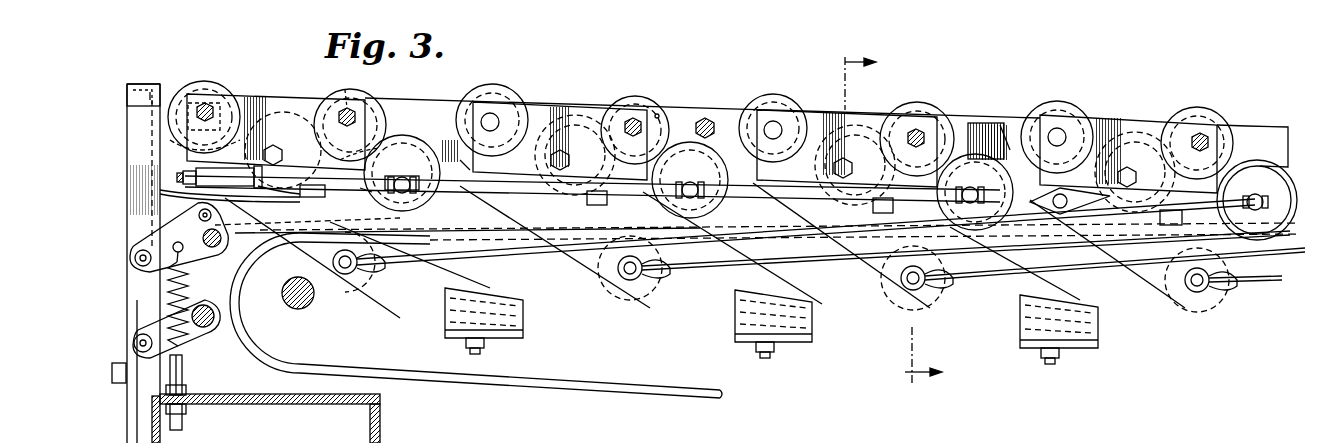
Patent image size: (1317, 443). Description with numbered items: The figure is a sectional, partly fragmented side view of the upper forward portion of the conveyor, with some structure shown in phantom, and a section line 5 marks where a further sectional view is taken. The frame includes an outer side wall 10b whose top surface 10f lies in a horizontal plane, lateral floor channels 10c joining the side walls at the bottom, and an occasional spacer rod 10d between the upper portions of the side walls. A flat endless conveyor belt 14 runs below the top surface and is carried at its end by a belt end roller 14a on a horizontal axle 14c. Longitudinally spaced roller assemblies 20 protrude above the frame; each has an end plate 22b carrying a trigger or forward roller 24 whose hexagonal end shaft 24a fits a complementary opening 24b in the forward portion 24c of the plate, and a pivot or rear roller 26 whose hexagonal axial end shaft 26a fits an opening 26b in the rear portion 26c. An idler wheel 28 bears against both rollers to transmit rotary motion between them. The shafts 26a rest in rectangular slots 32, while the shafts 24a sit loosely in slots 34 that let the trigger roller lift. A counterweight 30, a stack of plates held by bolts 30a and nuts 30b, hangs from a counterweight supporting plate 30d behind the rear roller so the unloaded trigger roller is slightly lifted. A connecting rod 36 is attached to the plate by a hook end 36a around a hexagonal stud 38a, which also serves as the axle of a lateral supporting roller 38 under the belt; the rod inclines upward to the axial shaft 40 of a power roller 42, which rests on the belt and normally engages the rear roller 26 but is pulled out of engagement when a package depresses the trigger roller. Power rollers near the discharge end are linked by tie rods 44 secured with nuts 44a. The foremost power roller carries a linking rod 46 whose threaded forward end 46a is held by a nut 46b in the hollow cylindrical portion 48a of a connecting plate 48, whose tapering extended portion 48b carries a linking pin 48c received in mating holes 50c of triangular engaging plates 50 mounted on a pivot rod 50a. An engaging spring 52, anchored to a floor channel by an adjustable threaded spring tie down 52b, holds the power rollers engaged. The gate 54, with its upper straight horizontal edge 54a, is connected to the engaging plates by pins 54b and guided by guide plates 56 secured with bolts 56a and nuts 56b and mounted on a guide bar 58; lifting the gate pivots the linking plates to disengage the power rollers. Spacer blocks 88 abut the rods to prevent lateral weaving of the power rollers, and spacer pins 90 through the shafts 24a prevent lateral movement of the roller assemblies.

The section line 5- 5 is at (899, 220).
The outer side wall 10b is at (1005, 130).
The lateral floor channel 10c is at (238, 404).
The spacer rod 10d is at (708, 116).
The top surface of side wall 10f is at (660, 110).
The flat endless conveyor belt 14 is at (492, 384).
The belt end roller 14a is at (276, 368).
The horizontal axle 14c is at (282, 293).
The roller assembly 20 is at (262, 60).
The end plate 22b is at (1148, 124).
The trigger or forward roller 24 is at (218, 88).
The hexagonal end shaft 24a is at (208, 100).
The complementary opening 24b is at (188, 112).
The forward portion of plate 24c is at (198, 145).
The pivot or rear roller 26 is at (330, 100).
The hexagonal axial end shaft 26a is at (352, 110).
The complementary opening 26b is at (376, 144).
The rear portion of plate 26c is at (400, 170).
The idler wheel 28 is at (282, 100).
The counterweight 30 is at (526, 314).
The bolt 30a is at (510, 272).
The nut 30b is at (486, 346).
The counterweight supporting plate 30d is at (660, 306).
The rectangular slot 32 is at (345, 90).
The slot 34 is at (143, 263).
The connecting rod 36 is at (806, 260).
The hook end 36a is at (362, 256).
The lateral supporting roller 38 is at (1228, 300).
The hexagonal stud 38a is at (332, 264).
The axial shaft 40 is at (394, 192).
The power roller 42 is at (1254, 152).
The tie rod 44 is at (504, 194).
The nut 44a is at (370, 192).
The linking rod 46 is at (318, 200).
The threaded forward end 46a is at (190, 179).
The nut 46b is at (235, 190).
The connecting plate 48 is at (204, 195).
The hollow cylindrical portion 48a is at (185, 173).
The extended portion 48b is at (279, 198).
The linking pin 48c is at (280, 216).
The engaging plate 50 is at (170, 228).
The pivot rod 50a is at (198, 248).
The mating hole 50c is at (198, 216).
The engaging spring 52 is at (172, 296).
The adjustable threaded spring tie down 52b is at (186, 386).
The gate 54 is at (127, 92).
The upper straight horizontal edge 54a is at (145, 84).
The pin 54b is at (135, 258).
The guide plate 56 is at (193, 338).
The bolt 56a is at (138, 332).
The nut 56b is at (134, 347).
The guide bar 58 is at (214, 316).
The spacer block 88 is at (600, 204).
The spacer pin 90 is at (512, 112).